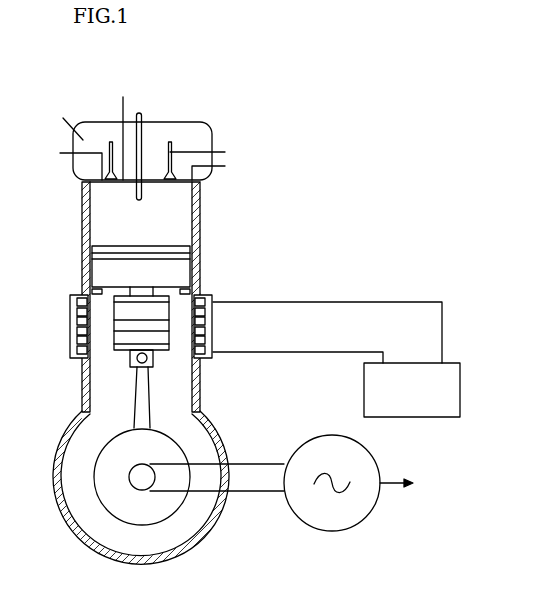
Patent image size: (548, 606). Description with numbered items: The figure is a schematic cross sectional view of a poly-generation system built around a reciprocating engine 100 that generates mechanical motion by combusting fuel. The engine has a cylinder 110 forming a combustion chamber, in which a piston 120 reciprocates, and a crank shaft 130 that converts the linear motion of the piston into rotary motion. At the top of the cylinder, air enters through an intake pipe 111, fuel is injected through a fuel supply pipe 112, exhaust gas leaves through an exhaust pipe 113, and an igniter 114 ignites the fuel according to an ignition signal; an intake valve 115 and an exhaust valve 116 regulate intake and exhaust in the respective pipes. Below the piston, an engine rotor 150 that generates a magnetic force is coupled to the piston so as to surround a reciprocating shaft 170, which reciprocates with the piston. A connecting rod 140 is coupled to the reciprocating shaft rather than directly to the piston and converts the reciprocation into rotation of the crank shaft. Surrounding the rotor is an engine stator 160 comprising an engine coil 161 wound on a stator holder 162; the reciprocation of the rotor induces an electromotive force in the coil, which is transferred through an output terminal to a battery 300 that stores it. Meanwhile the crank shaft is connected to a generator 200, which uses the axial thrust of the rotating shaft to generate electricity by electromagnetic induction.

The reciprocating engine 100 is at (208, 211).
The cylinder 110 is at (83, 204).
The intake pipe 111 is at (73, 149).
The fuel supply pipe 112 is at (90, 119).
The exhaust pipe 113 is at (231, 158).
The igniter 114 is at (140, 112).
The intake valve 115 is at (110, 141).
The exhaust valve 116 is at (172, 140).
The piston 120 is at (100, 275).
The crank shaft 130 is at (93, 468).
The connecting rod 140 is at (138, 389).
The engine rotor 150 is at (170, 302).
The engine stator 160 is at (34, 301).
The engine coil 161 is at (75, 300).
The stator holder 162 is at (75, 324).
The reciprocating shaft 170 is at (143, 287).
The generator 200 is at (333, 533).
The battery 300 is at (364, 385).